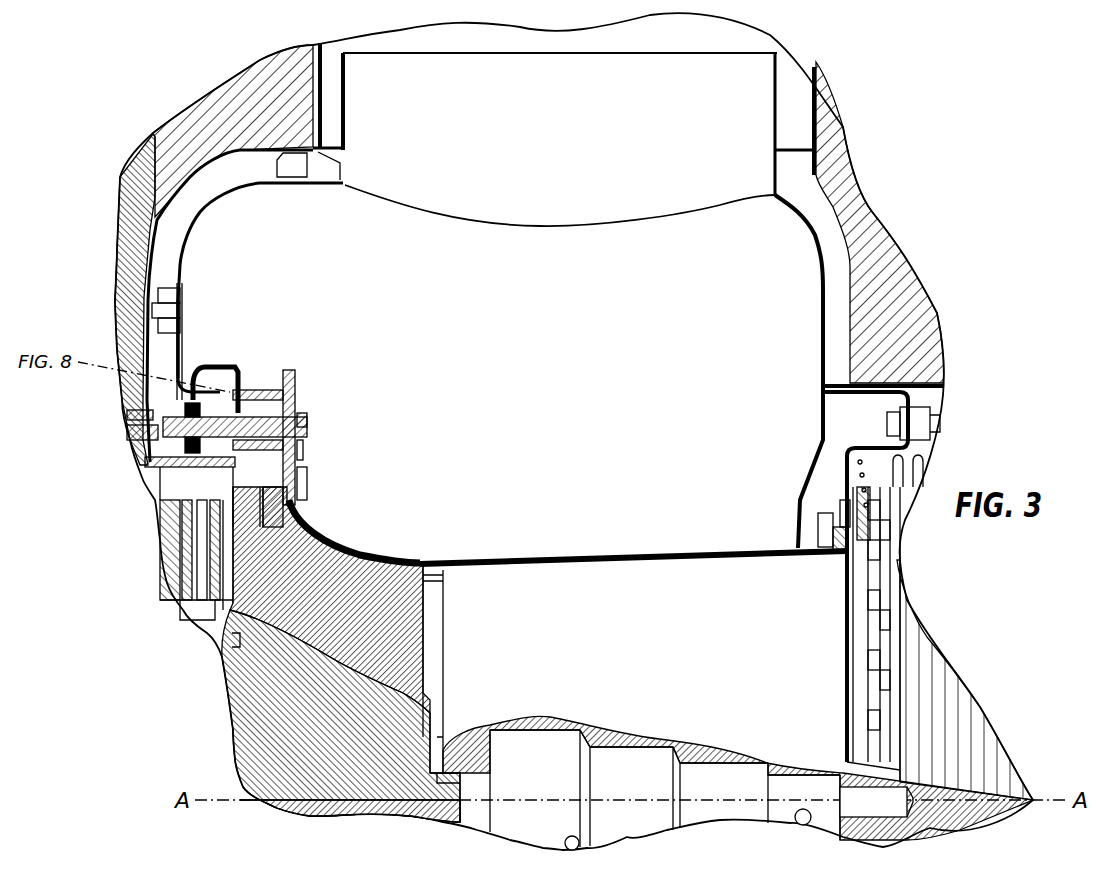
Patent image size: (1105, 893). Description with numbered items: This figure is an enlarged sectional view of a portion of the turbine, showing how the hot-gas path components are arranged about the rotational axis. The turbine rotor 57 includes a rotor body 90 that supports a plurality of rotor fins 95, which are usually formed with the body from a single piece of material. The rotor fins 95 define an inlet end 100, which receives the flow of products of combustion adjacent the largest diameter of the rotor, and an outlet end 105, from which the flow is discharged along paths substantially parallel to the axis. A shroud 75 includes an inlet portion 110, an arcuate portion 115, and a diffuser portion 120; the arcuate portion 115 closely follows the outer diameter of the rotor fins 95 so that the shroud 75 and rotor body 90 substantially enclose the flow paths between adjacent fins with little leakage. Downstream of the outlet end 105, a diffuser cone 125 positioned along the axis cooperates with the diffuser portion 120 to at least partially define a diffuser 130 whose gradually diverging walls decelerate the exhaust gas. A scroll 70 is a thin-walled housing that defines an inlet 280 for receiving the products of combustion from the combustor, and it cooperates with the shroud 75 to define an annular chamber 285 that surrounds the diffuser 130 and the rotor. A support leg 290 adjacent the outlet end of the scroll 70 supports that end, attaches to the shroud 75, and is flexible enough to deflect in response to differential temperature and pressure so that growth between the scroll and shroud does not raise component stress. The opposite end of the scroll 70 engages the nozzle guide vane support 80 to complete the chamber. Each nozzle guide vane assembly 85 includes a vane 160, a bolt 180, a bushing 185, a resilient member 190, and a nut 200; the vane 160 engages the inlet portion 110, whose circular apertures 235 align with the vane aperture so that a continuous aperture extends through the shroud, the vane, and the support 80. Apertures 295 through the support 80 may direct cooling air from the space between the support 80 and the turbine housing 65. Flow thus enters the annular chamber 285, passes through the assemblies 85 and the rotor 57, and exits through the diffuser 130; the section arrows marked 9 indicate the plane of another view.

The turbine rotor 57 is at (445, 728).
The turbine housing 65 is at (863, 220).
The scroll 70 is at (803, 225).
The shroud 75 is at (583, 558).
The nozzle guide vane support 80 is at (177, 513).
The nozzle guide vane assembly 85 is at (318, 410).
The rotor body 90 is at (420, 687).
The rotor fins 95 is at (432, 607).
The inlet end 100 is at (293, 513).
The outlet end 105 is at (445, 577).
The inlet portion 110 is at (297, 390).
The arcuate portion 115 is at (320, 533).
The diffuser portion 120 is at (732, 550).
The diffuser cone 125 is at (700, 735).
The diffuser 130 is at (752, 670).
The vane 160 is at (270, 390).
The bolt 180 is at (307, 420).
The bushing 185 is at (210, 420).
The resilient member 190 is at (187, 400).
The nut 200 is at (160, 450).
The circular apertures 235 is at (307, 440).
The inlet 280 is at (347, 138).
The annular chamber 285 is at (552, 390).
The support leg 290 is at (847, 473).
The apertures 295 is at (172, 382).
The section line 9 is at (260, 245).